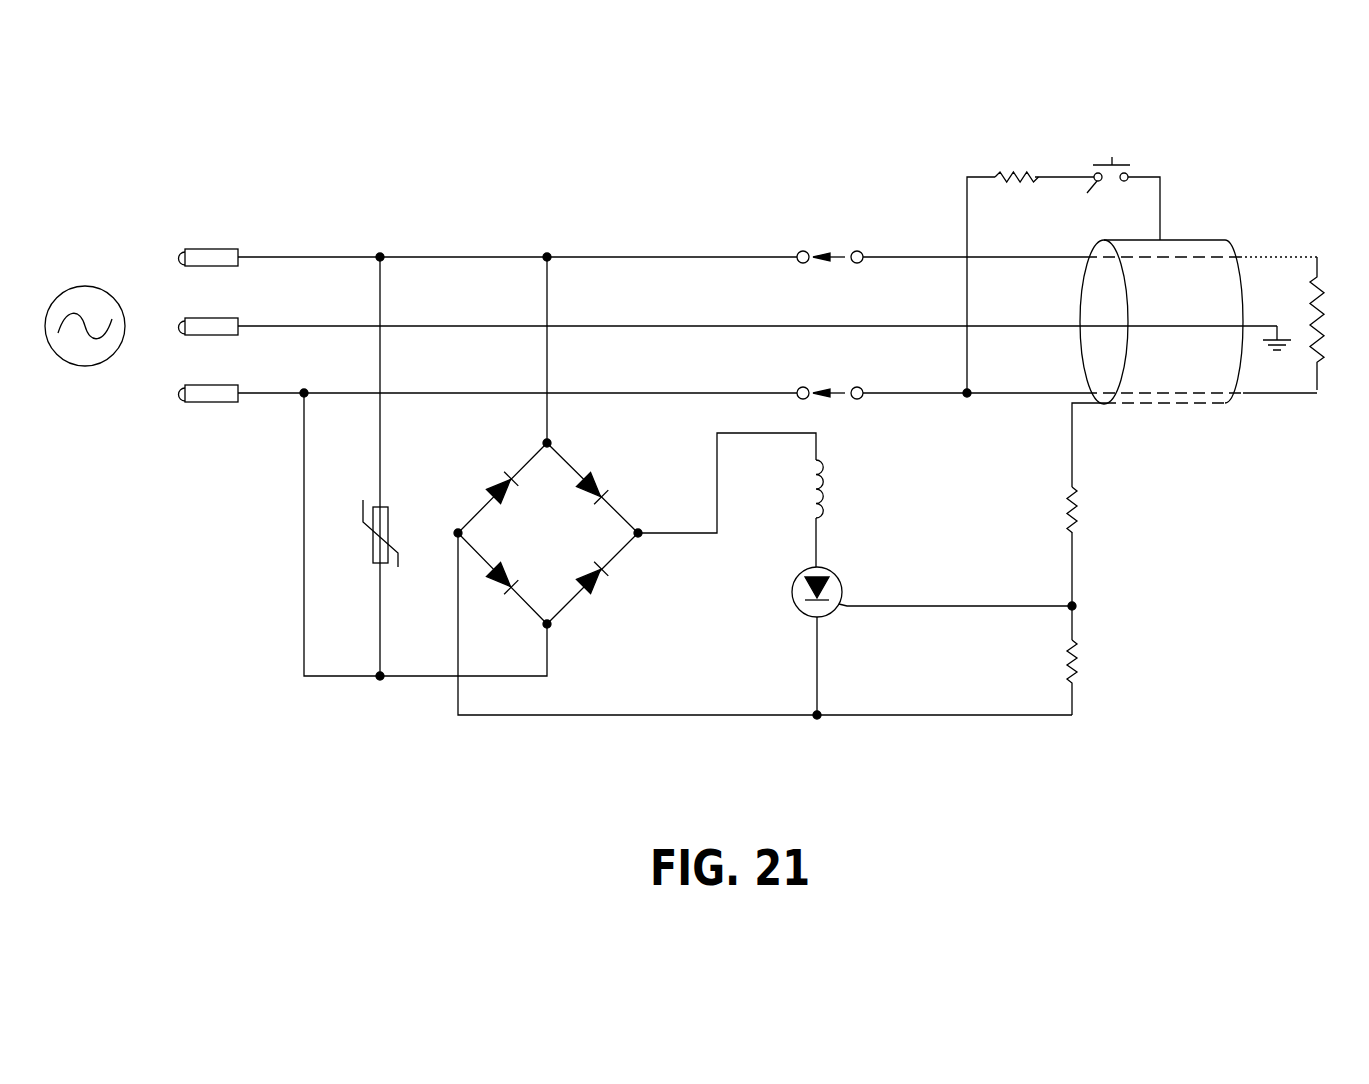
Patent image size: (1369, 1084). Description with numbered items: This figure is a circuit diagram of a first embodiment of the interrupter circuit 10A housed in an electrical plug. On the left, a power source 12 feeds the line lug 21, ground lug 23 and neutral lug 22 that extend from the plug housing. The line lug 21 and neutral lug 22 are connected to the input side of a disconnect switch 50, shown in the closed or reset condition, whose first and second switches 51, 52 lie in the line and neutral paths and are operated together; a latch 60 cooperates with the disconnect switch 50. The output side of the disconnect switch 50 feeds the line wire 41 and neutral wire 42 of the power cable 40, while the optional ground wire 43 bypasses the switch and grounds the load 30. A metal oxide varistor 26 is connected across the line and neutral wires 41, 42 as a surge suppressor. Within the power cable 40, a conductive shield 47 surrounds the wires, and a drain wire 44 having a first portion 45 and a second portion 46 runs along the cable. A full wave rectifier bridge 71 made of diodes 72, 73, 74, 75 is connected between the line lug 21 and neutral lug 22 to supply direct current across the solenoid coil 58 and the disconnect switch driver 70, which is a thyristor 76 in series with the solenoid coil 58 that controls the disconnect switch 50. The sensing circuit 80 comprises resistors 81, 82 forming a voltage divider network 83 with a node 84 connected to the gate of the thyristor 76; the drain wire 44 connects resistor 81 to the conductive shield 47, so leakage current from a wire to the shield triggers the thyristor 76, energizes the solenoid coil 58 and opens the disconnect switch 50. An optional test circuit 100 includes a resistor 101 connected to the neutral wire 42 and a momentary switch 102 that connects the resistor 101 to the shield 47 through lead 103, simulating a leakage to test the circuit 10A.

The circuit 10A is at (305, 228).
The power source 12 is at (91, 285).
The line lug 21 is at (228, 250).
The neutral lug 22 is at (229, 403).
The ground lug 23 is at (228, 318).
The metal oxide varistor 26 is at (390, 507).
The load 30 is at (1320, 300).
The power cable 40 is at (1260, 203).
The line wire 41 is at (1033, 253).
The neutral wire 42 is at (1037, 396).
The ground wire 43 is at (1037, 328).
The drain wire 44 is at (1075, 407).
The first portion 45 is at (1173, 405).
The second portion 46 is at (1072, 465).
The conductive shield 47 is at (1210, 240).
The disconnect switch 50 is at (797, 238).
The first switch 51 is at (862, 252).
The second switch 52 is at (862, 390).
The solenoid coil 58 is at (812, 489).
The latch 60 is at (840, 226).
The disconnect switch driver 70 is at (868, 523).
The full wave rectifier bridge 71 is at (600, 447).
The diode 72 is at (605, 480).
The diode 73 is at (500, 592).
The diode 74 is at (608, 575).
The diode 75 is at (513, 476).
The thyristor 76 is at (840, 580).
The sensing circuit 80 is at (1157, 543).
The resistor 81 is at (1080, 503).
The resistor 82 is at (1080, 655).
The voltage divider network 83 is at (1010, 543).
The node 84 is at (1075, 603).
The test circuit 100 is at (932, 192).
The resistor 101 is at (1010, 170).
The momentary switch 102 is at (1082, 190).
The test lead 103 is at (1162, 192).